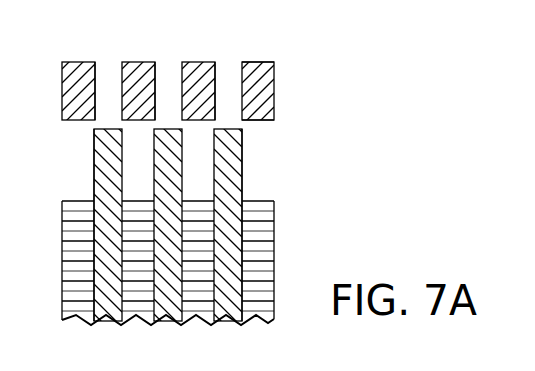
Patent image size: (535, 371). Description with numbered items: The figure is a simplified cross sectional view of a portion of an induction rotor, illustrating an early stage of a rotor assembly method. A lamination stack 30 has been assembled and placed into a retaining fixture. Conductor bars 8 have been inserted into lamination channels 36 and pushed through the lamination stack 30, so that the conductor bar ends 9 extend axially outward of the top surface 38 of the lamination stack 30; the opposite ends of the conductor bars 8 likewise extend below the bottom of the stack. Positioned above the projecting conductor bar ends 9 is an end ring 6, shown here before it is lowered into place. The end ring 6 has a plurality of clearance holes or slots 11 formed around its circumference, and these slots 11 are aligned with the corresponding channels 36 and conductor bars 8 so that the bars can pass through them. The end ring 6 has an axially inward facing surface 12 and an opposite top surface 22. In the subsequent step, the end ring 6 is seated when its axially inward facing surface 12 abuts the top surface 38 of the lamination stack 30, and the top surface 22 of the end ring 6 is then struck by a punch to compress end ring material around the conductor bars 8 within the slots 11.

The end ring 6 is at (275, 89).
The conductor bars 8 is at (167, 162).
The conductor bar ends 9 is at (106, 127).
The clearance holes/slots 11 is at (100, 81).
The axially inward facing surface 12 is at (264, 124).
The top surface 22 is at (263, 61).
The lamination stack 30 is at (276, 256).
The lamination channels 36 is at (226, 290).
The top surface 38 is at (262, 201).